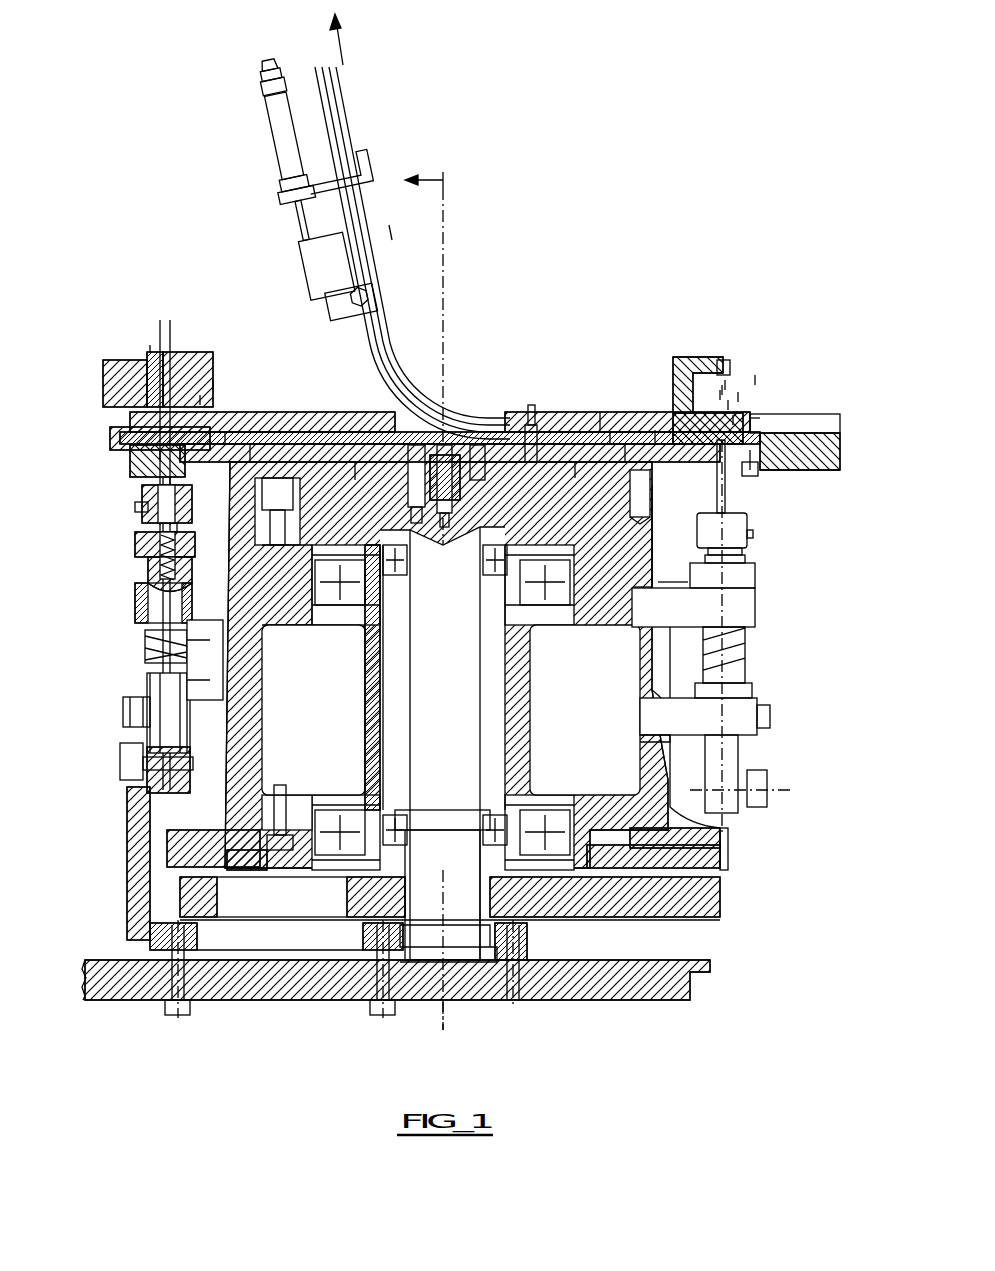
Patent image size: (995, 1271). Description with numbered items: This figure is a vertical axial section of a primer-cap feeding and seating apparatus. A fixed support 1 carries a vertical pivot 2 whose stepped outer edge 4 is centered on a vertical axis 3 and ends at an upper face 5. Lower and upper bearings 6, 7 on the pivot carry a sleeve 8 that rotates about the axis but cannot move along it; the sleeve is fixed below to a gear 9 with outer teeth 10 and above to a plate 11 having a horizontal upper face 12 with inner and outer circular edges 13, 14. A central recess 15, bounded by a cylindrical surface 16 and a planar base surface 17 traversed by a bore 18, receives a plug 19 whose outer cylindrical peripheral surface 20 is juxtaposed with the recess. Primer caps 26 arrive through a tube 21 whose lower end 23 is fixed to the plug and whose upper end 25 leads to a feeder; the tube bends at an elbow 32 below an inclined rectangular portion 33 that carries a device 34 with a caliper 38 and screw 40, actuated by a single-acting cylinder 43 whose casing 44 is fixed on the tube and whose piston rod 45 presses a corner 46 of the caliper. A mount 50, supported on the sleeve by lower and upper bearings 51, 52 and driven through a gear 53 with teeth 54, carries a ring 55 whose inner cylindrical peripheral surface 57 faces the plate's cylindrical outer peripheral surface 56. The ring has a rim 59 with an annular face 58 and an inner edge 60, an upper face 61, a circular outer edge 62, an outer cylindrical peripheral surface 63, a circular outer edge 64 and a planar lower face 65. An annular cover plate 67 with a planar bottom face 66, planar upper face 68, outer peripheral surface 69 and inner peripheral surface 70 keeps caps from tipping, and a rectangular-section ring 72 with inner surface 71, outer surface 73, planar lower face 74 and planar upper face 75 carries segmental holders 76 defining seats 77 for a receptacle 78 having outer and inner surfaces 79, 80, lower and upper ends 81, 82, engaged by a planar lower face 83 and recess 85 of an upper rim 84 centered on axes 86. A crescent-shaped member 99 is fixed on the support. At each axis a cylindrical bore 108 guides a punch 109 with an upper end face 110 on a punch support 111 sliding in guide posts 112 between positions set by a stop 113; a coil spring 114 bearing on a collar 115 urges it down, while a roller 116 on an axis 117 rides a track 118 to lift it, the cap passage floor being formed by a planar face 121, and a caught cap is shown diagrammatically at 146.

The fixed support 1 is at (690, 990).
The vertical pivot 2 is at (465, 945).
The vertical axis 3 is at (443, 1012).
The stepped outer edge 4 is at (510, 945).
The upper face 5 is at (475, 495).
The lower bearing 6 is at (385, 820).
The upper bearing 7 is at (385, 582).
The sleeve 8 is at (365, 720).
The gear 9 is at (645, 905).
The outer teeth 10 is at (710, 900).
The plate 11 is at (285, 412).
The upper face 12 is at (300, 444).
The inner circular edge 13 is at (335, 444).
The outer circular edge 14 is at (140, 460).
The recess 15 is at (360, 480).
The cylindrical surface 16 is at (352, 470).
The planar base surface 17 is at (335, 498).
The cylindrical bore 18 is at (435, 445).
The plug 19 is at (465, 455).
The outer cylindrical peripheral surface 20 is at (600, 440).
The tube 21 is at (340, 118).
The lower end 23 is at (530, 455).
The upper end 25 is at (351, 39).
The primer caps 26 is at (178, 385).
The elbow 32 is at (424, 591).
The inclined rectangular portion 33 is at (372, 226).
The device 34 is at (297, 193).
The caliper 38 is at (322, 275).
The screw 40 is at (330, 310).
The single-acting cylinder 43 is at (268, 118).
The casing 44 is at (283, 137).
The piston rod 45 is at (298, 232).
The corner 46 is at (305, 240).
The mount 50 is at (710, 820).
The lower bearing 51 is at (535, 810).
The upper bearing 52 is at (545, 615).
The gear 53 is at (700, 862).
The teeth 54 is at (740, 850).
The ring 55 is at (752, 460).
The cylindrical outer peripheral surface 56 is at (160, 450).
The inner cylindrical peripheral surface 57 is at (232, 440).
The annular face 58 is at (255, 455).
The rim 59 is at (655, 430).
The inner edge 60 is at (625, 460).
The upper face 61 is at (740, 396).
The circular outer edge 62 is at (760, 440).
The outer cylindrical peripheral surface 63 is at (800, 470).
The circular outer edge 64 is at (752, 470).
The planar lower face 65 is at (673, 492).
The planar bottom face 66 is at (315, 444).
The annular cover plate 67 is at (615, 440).
The planar upper face 68 is at (575, 470).
The cylindrical outer peripheral surface 69 is at (735, 420).
The inner cylindrical peripheral surface 70 is at (535, 440).
The inner cylindrical peripheral surface 71 is at (672, 450).
The rectangular-section ring 72 is at (745, 418).
The cylindrical outer peripheral surface 73 is at (748, 430).
The planar lower face 74 is at (713, 455).
The planar upper face 75 is at (722, 392).
The segmental holders 76 is at (685, 400).
The seat 77 is at (730, 405).
The receptacle 78 is at (150, 365).
The outer surface 79 is at (200, 395).
The inner surface 80 is at (165, 400).
The lower end 81 is at (135, 425).
The upper end 82 is at (160, 360).
The planar lower face 83 is at (712, 370).
The upper rim 84 is at (722, 390).
The recess 85 is at (725, 385).
The axes 86 is at (760, 378).
The crescent-shaped member 99 is at (115, 370).
The cylindrical bore 108 is at (158, 482).
The punch 109 is at (190, 480).
The upper end face 110 is at (140, 405).
The punch support 111 is at (140, 582).
The guide posts 112 is at (135, 610).
The stop 113 is at (147, 545).
The coil spring 114 is at (150, 640).
The collar 115 is at (190, 660).
The roller 116 is at (125, 775).
The axis 117 is at (118, 765).
The track 118 is at (135, 805).
The planar face 121 is at (215, 385).
The caught cap 146 is at (176, 560).